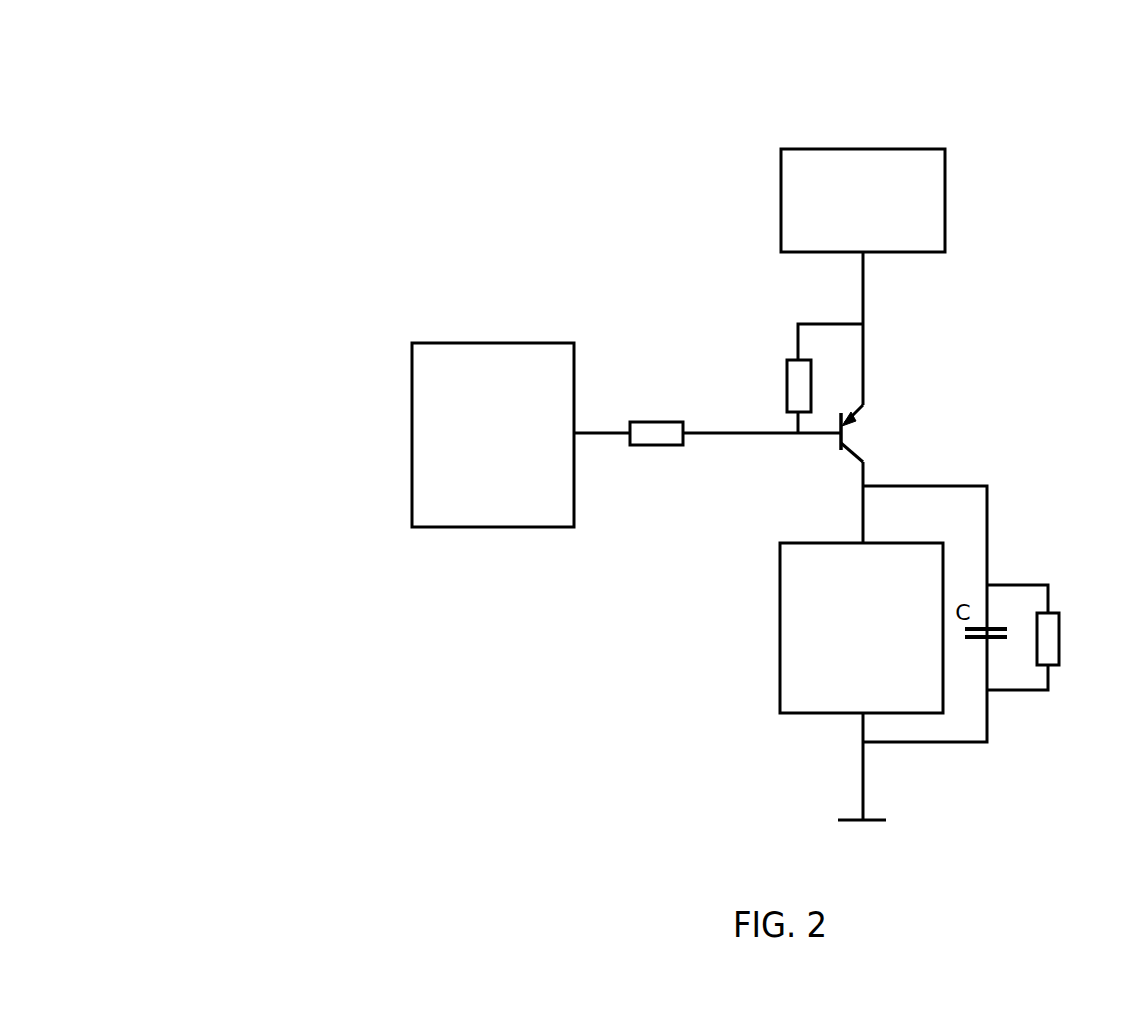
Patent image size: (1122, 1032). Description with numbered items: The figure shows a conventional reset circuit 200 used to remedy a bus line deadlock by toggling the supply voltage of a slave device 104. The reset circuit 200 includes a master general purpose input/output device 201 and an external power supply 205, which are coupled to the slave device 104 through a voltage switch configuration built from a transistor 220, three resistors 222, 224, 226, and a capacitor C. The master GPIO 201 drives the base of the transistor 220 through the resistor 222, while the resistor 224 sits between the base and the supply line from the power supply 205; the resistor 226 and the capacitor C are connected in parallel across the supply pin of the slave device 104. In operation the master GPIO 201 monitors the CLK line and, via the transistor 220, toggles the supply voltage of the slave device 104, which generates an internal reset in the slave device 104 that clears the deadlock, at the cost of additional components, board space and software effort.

The reset circuit 200 is at (177, 39).
The master general purpose input/output (GPIO) device 201 is at (493, 435).
The external power supply 205 is at (863, 200).
The slave device 104 is at (861, 628).
The transistor 220 is at (874, 433).
The resistor 222 is at (656, 416).
The resistor 224 is at (773, 386).
The resistor 226 is at (1073, 639).